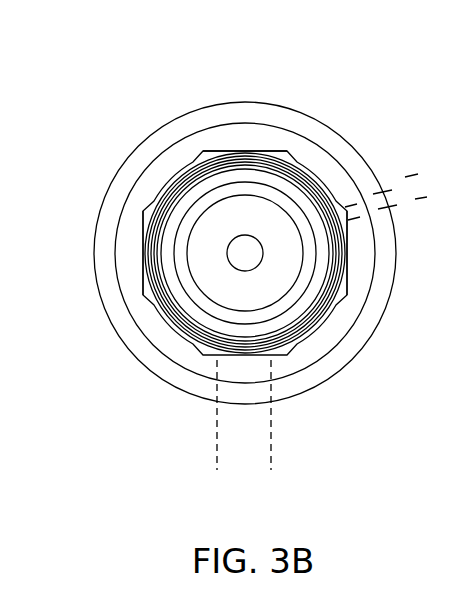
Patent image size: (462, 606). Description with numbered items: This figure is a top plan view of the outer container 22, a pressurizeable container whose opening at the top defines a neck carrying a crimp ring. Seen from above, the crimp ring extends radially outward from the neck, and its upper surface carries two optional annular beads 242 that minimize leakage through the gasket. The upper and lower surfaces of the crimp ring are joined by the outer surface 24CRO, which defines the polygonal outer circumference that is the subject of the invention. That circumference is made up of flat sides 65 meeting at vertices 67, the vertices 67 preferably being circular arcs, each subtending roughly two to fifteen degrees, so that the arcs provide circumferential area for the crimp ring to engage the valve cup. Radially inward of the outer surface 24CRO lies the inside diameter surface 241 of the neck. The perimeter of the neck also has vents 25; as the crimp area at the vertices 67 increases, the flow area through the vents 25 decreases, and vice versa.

The outer container 22 is at (365, 414).
The outer surface of the crimp ring 24CRO is at (150, 282).
The vent 25 is at (305, 170).
The inside diameter surface 241 is at (205, 183).
The annular beads 242 is at (231, 151).
The vertices 67 is at (430, 230).
The sides 65 is at (150, 247).